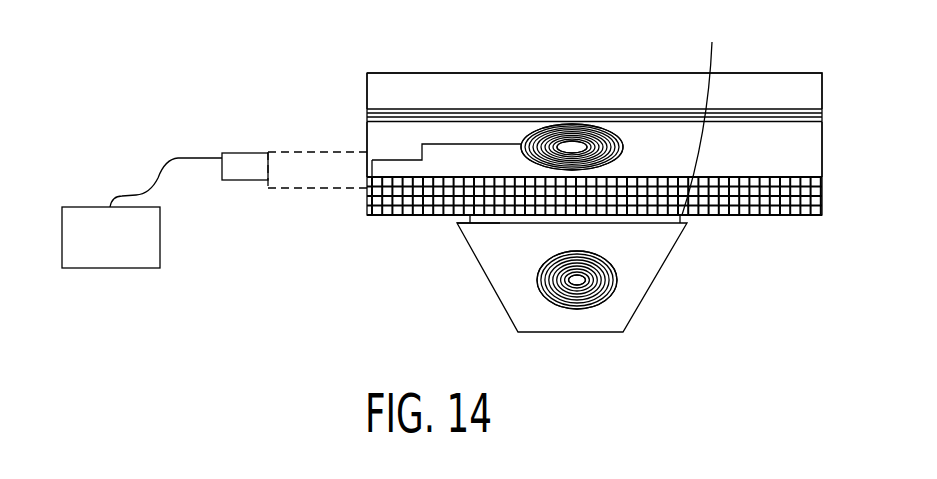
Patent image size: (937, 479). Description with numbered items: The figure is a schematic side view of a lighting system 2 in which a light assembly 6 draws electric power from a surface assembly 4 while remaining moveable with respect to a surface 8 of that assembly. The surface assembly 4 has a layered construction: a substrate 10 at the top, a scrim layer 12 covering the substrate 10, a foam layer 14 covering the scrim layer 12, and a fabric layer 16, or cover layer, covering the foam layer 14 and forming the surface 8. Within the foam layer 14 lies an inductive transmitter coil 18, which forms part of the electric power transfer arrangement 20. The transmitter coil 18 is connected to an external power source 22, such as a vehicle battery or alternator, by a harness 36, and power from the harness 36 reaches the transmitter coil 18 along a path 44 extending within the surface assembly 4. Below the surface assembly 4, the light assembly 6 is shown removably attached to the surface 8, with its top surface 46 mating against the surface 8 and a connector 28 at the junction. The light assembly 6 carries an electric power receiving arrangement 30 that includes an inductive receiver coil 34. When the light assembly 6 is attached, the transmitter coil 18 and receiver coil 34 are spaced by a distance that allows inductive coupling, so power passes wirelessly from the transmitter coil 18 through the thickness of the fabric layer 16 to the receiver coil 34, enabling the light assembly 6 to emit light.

The lighting system 2 is at (135, 90).
The surface assembly 4 is at (321, 45).
The light assembly 6 is at (667, 294).
The surface 8 is at (754, 217).
The substrate 10 is at (815, 92).
The scrim layer 12 is at (815, 118).
The foam layer 14 is at (815, 163).
The fabric layer 16 is at (823, 200).
The inductive transmitter coil 18 is at (588, 124).
The electric power transfer arrangement 20 is at (572, 147).
The power source 22 is at (83, 217).
The connector 28 is at (487, 223).
The electric power receiving arrangement 30 is at (537, 295).
The inductive receiver coil 34 is at (577, 280).
The harness 36 is at (283, 185).
The path 44 is at (455, 144).
The top surface 46 is at (702, 114).